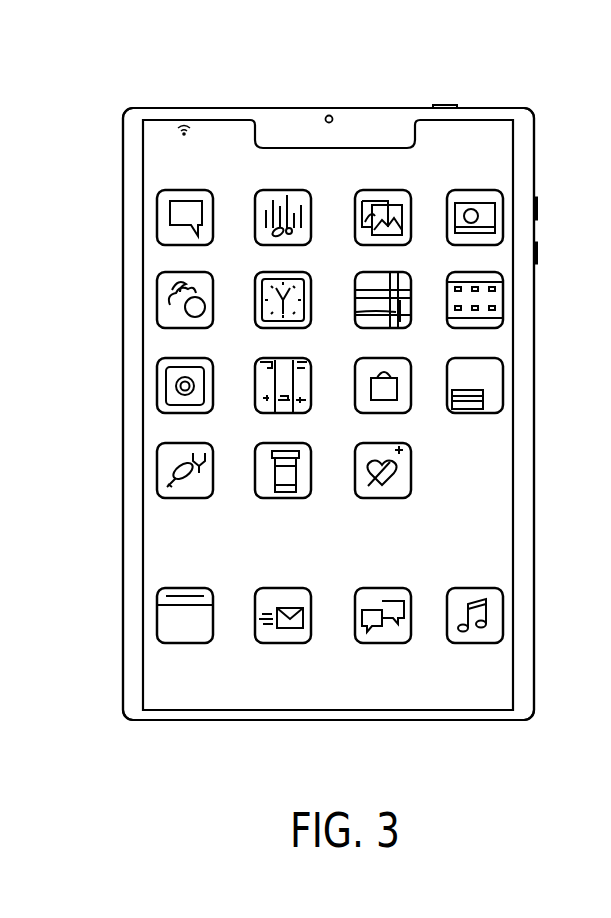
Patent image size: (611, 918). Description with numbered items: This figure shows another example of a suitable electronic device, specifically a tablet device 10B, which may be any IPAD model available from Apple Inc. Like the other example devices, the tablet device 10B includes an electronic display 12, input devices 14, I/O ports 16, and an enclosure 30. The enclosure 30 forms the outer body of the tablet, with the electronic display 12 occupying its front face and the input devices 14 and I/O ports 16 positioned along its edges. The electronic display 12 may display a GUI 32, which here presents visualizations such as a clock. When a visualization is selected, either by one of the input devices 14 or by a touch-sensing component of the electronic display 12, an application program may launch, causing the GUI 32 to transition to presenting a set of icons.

The tablet device 10B is at (132, 60).
The electronic display 12 is at (513, 408).
The input devices 14 is at (447, 107).
The I/O ports 16 is at (200, 108).
The enclosure 30 is at (534, 355).
The GUI 32 is at (497, 478).